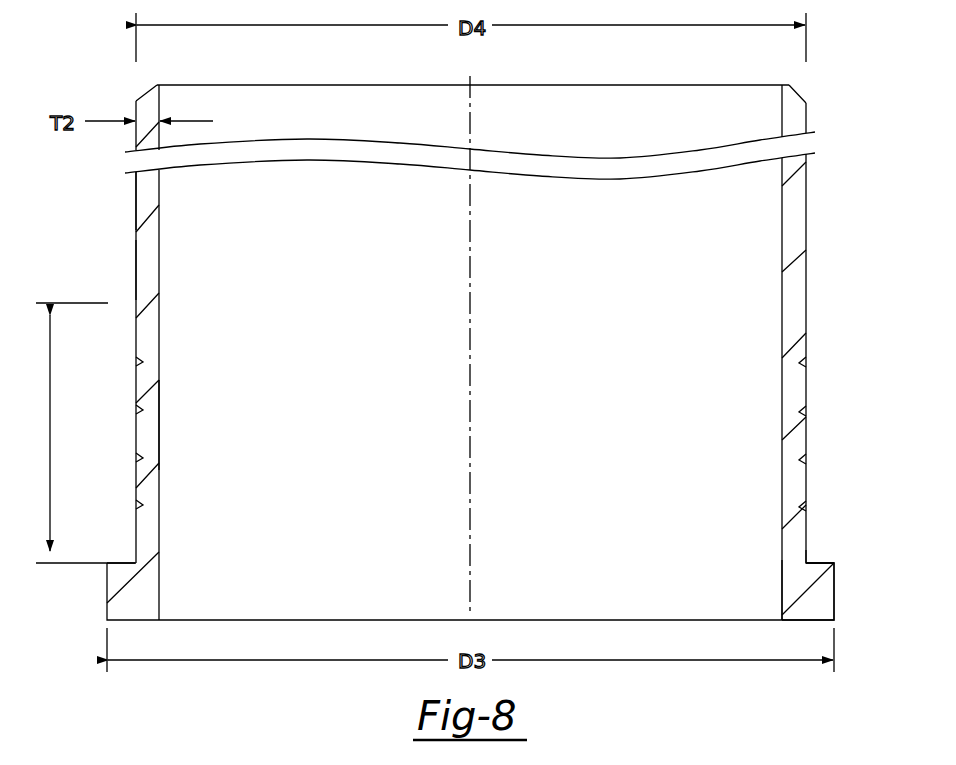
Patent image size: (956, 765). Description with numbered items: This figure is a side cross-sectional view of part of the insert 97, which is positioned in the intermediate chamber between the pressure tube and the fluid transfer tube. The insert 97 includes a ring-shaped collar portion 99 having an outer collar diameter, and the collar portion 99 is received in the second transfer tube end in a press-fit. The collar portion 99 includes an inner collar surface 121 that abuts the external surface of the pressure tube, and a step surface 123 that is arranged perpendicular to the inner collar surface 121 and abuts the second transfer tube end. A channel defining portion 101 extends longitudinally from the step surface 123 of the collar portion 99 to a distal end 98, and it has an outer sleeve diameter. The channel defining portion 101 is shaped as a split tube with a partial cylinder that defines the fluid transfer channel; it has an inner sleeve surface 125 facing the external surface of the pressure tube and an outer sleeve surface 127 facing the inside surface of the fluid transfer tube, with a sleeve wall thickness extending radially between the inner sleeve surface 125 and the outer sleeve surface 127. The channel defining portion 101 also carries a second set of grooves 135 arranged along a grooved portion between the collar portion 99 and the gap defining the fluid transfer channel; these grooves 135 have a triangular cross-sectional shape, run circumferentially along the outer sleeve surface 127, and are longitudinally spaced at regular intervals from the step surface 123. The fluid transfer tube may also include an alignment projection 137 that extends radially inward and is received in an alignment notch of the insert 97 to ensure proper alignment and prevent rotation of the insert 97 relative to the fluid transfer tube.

The insert 97 is at (845, 55).
The distal end 98 is at (152, 88).
The collar portion 99 is at (823, 598).
The channel defining portion 101 is at (136, 272).
The inner collar surface 121 is at (782, 598).
The step surface 123 is at (815, 560).
The inner sleeve surface 125 is at (159, 425).
The outer sleeve surface 127 is at (136, 200).
The second set of grooves 135 is at (136, 362).
The alignment projection 137 is at (50, 451).